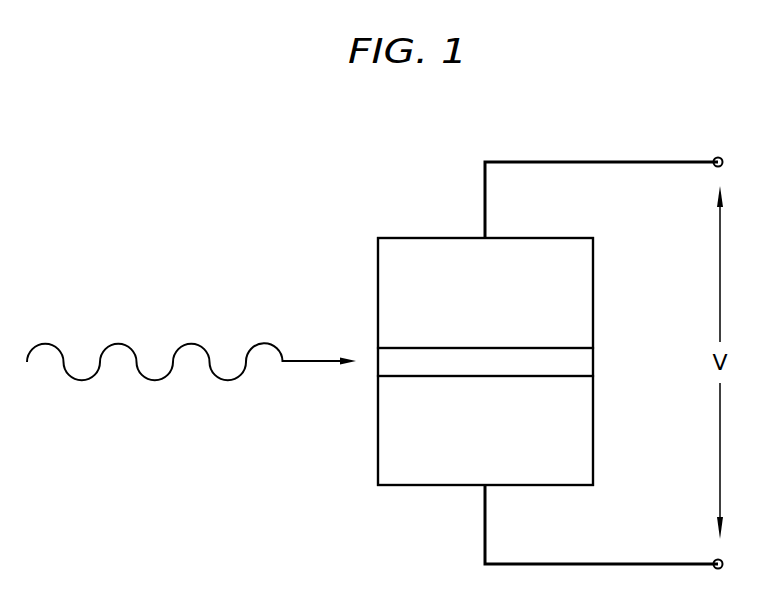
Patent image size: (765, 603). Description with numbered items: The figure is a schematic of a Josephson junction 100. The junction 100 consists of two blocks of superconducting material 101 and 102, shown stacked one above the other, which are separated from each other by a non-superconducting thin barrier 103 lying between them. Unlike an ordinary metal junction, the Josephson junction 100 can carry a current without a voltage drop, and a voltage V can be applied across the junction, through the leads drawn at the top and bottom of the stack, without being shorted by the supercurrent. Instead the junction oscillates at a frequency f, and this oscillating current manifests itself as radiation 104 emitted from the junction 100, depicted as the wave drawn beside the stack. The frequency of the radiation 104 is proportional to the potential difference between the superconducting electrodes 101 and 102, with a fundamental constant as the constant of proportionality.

The Josephson junction 100 is at (692, 321).
The block of superconducting material 101 is at (588, 310).
The block of superconducting material 102 is at (578, 430).
The non-superconducting thin barrier 103 is at (578, 362).
The radiation 104 is at (212, 357).